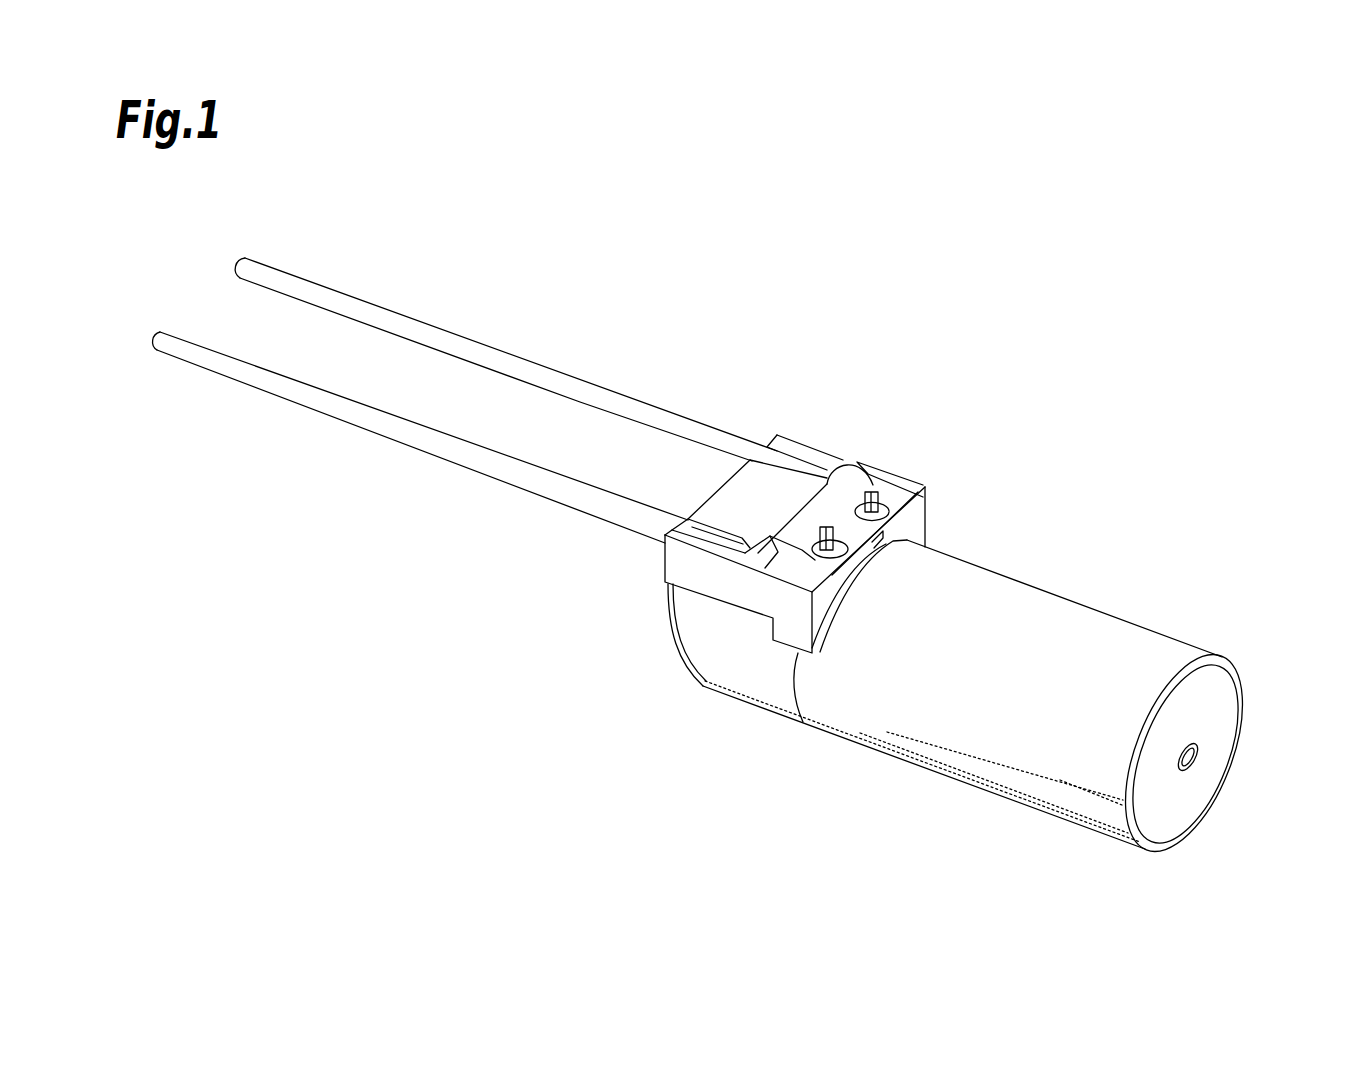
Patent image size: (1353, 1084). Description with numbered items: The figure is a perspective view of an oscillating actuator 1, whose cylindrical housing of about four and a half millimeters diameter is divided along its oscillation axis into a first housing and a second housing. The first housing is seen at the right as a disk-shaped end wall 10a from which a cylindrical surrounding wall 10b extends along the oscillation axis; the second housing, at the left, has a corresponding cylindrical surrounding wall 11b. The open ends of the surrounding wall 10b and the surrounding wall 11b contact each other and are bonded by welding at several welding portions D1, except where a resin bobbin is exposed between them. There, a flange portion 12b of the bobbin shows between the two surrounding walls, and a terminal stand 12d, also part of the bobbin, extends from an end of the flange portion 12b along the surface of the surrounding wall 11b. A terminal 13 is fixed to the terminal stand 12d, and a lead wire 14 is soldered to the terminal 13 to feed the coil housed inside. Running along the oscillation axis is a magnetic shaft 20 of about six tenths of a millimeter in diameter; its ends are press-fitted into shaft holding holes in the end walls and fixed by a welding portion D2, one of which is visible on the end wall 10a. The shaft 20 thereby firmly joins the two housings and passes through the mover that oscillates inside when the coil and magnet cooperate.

The oscillating actuator 1 is at (627, 282).
The lead wire 14 is at (541, 370).
The surrounding wall 11b is at (722, 665).
The terminal stand 12d is at (752, 487).
The flange portion 12b is at (928, 520).
The terminal 13 is at (823, 527).
The surrounding wall 10b is at (1042, 613).
The end wall 10a is at (1223, 710).
The shaft 20 is at (1196, 768).
The welding portion D1 is at (792, 687).
The welding portion D2 is at (1185, 745).